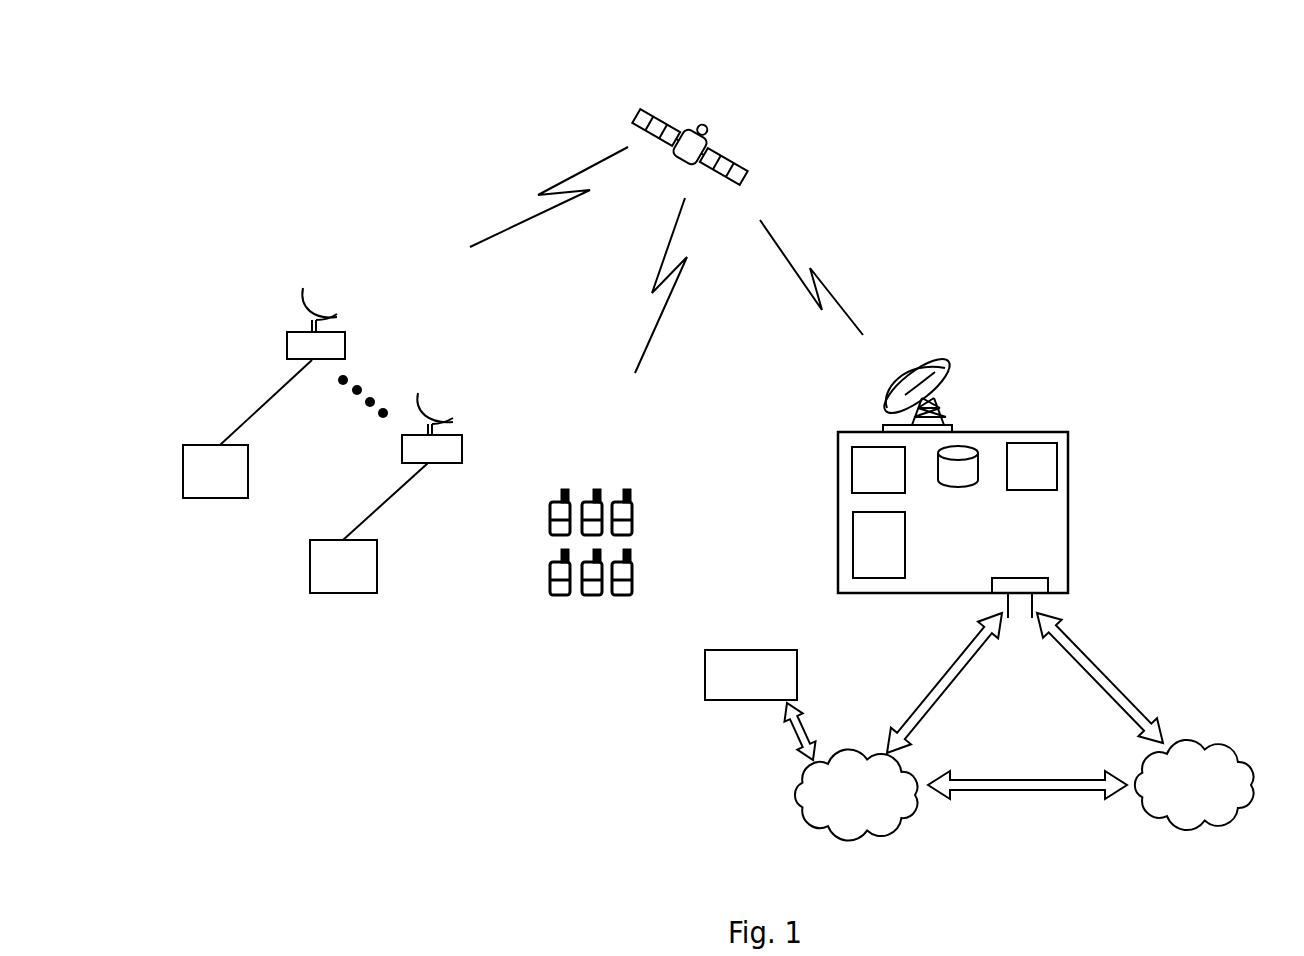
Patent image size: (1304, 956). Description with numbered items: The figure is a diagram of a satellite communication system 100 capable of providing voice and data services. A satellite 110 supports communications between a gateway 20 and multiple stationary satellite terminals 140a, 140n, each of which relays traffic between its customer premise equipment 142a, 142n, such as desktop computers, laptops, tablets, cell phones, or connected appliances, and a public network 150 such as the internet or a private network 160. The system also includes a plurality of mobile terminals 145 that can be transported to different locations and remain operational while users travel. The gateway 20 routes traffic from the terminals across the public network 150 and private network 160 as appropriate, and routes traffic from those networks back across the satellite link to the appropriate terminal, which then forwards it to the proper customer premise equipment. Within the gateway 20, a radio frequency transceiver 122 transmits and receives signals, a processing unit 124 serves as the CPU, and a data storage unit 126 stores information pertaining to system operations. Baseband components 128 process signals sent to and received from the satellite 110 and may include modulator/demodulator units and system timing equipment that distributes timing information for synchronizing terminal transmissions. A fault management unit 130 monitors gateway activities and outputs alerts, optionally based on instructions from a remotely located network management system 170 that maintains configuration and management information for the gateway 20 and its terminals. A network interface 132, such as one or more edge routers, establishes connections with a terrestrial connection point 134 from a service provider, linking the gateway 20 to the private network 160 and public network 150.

The satellite communication system 100 is at (1090, 82).
The satellite 110 is at (732, 153).
The gateway 20 is at (1140, 330).
The radio frequency transceiver 122 is at (952, 372).
The processing unit 124 is at (850, 468).
The data storage unit 126 is at (962, 487).
The baseband components 128 is at (852, 547).
The fault management unit 130 is at (1057, 458).
The network interface 132 is at (1018, 578).
The terrestrial connection point 134 is at (1017, 627).
The stationary satellite terminal 140a is at (287, 343).
The stationary satellite terminal 140n is at (402, 448).
The customer premise equipment 142a is at (217, 498).
The customer premise equipment 142n is at (342, 593).
The mobile terminals 145 is at (528, 606).
The public network 150 is at (1194, 795).
The private network 160 is at (856, 805).
The network management system 170 is at (705, 680).